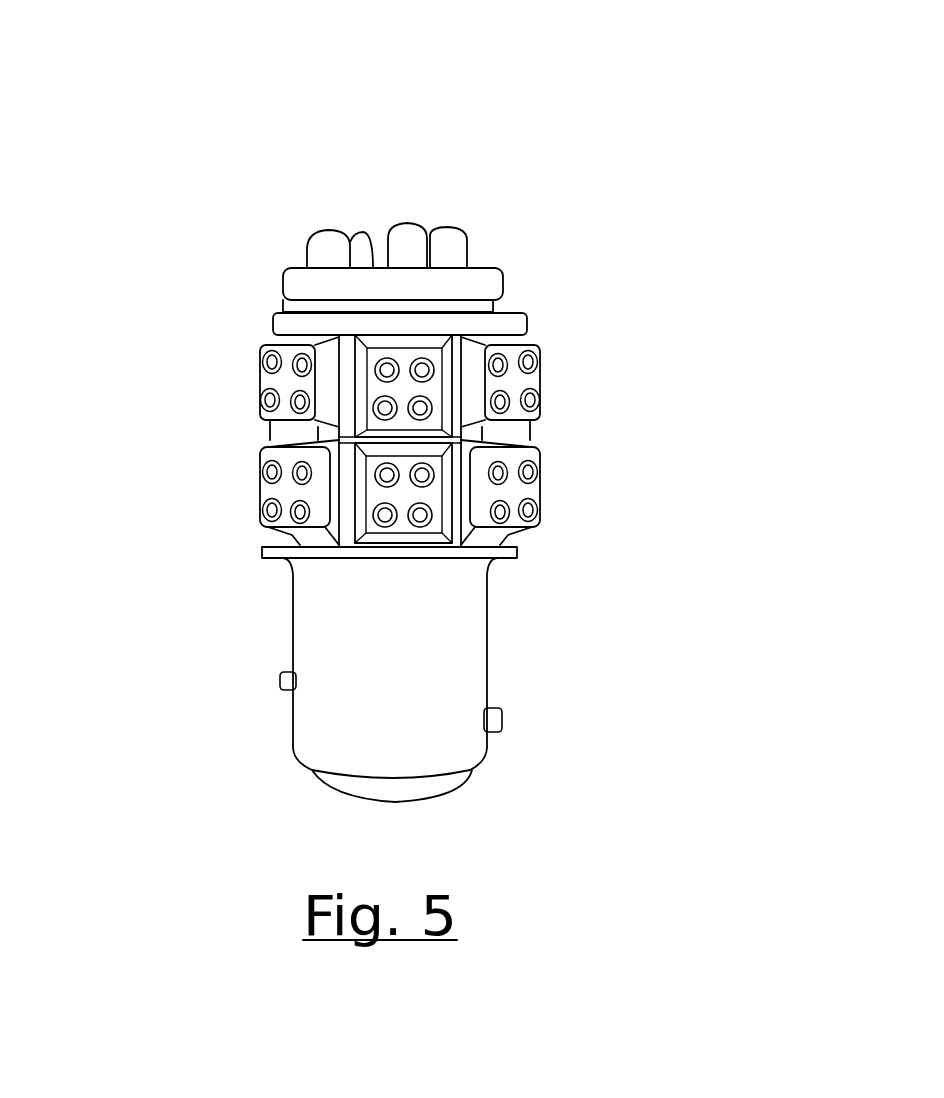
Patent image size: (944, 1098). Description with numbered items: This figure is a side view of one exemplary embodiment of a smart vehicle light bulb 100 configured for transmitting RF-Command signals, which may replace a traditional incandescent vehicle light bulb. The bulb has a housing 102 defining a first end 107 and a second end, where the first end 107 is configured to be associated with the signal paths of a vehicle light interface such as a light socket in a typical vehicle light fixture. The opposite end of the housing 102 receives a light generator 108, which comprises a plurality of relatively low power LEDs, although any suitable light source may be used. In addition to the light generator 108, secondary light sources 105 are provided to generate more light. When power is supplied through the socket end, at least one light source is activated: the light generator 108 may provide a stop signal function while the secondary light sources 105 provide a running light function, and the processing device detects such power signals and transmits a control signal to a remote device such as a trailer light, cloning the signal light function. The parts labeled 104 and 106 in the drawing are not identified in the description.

The smart vehicle light bulb 100 is at (228, 170).
The housing 102 is at (298, 647).
The top LED assembly 104 is at (485, 237).
The secondary light sources 105 is at (563, 393).
The flange 106 is at (270, 325).
The first end 107 is at (500, 798).
The light generator 108 is at (358, 237).